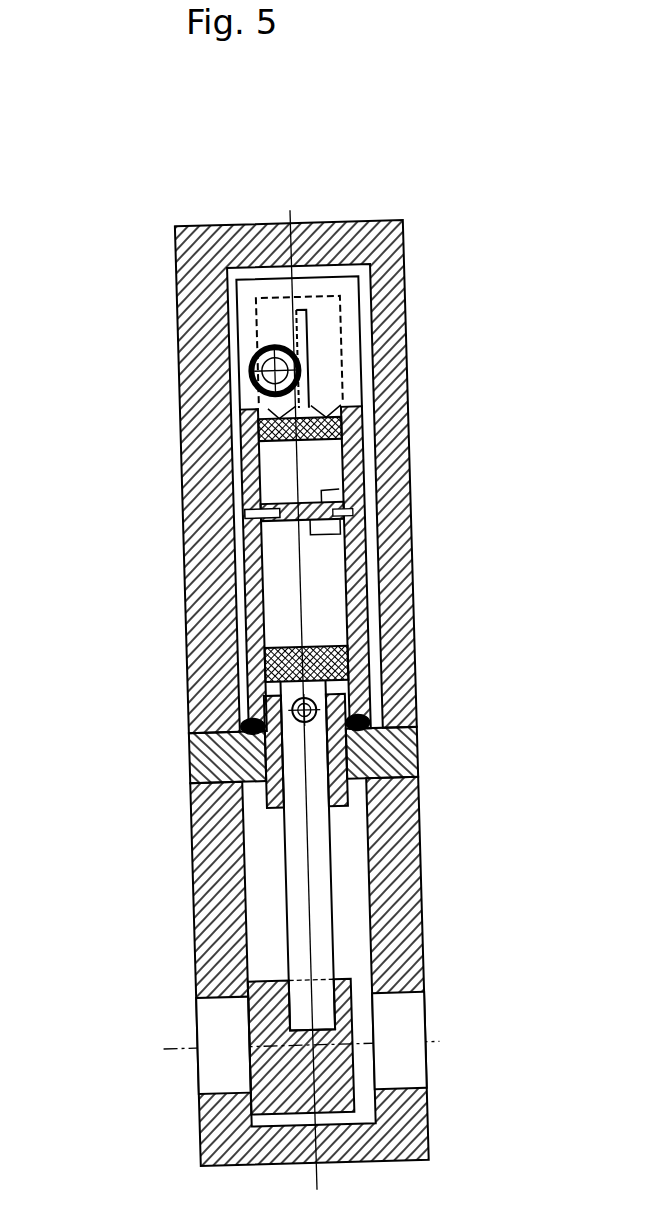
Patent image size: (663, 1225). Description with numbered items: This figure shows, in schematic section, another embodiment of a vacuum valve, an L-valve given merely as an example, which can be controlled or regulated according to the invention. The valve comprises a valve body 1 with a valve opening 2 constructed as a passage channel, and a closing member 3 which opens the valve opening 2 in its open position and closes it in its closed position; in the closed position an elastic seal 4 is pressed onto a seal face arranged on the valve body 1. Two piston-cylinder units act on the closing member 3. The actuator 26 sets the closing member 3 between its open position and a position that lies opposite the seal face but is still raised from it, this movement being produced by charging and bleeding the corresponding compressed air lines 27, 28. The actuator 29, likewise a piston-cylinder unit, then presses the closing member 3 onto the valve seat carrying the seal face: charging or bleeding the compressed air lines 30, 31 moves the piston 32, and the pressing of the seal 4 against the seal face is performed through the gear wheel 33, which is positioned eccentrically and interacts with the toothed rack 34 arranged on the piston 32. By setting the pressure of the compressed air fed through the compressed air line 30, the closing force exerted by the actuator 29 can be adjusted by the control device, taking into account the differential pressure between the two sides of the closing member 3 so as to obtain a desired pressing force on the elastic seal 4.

The valve body 1 is at (402, 876).
The valve opening 2 is at (230, 1025).
The closing member 3 is at (358, 1067).
The elastic seal 4 is at (250, 985).
The actuator 26 is at (373, 640).
The compressed air line 27 is at (338, 515).
The compressed air line 28 is at (342, 698).
The actuator 29 is at (367, 383).
The compressed air line 30 is at (246, 520).
The compressed air line 31 is at (352, 395).
The piston 32 is at (248, 430).
The gear wheel 33 is at (242, 355).
The toothed rack 34 is at (302, 333).